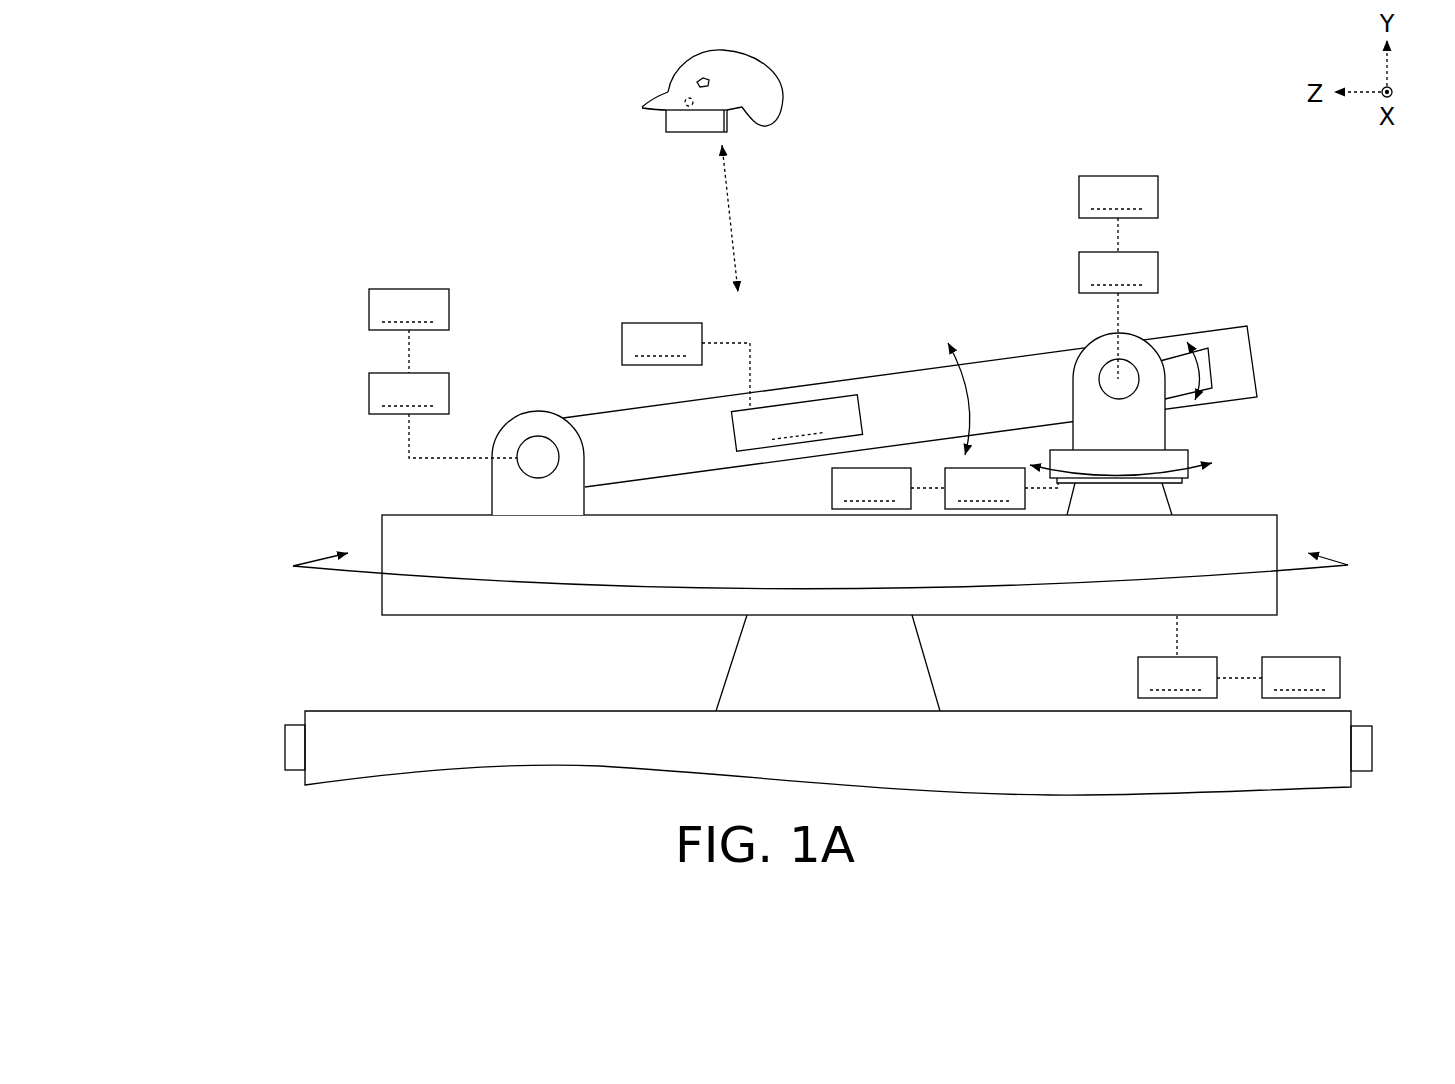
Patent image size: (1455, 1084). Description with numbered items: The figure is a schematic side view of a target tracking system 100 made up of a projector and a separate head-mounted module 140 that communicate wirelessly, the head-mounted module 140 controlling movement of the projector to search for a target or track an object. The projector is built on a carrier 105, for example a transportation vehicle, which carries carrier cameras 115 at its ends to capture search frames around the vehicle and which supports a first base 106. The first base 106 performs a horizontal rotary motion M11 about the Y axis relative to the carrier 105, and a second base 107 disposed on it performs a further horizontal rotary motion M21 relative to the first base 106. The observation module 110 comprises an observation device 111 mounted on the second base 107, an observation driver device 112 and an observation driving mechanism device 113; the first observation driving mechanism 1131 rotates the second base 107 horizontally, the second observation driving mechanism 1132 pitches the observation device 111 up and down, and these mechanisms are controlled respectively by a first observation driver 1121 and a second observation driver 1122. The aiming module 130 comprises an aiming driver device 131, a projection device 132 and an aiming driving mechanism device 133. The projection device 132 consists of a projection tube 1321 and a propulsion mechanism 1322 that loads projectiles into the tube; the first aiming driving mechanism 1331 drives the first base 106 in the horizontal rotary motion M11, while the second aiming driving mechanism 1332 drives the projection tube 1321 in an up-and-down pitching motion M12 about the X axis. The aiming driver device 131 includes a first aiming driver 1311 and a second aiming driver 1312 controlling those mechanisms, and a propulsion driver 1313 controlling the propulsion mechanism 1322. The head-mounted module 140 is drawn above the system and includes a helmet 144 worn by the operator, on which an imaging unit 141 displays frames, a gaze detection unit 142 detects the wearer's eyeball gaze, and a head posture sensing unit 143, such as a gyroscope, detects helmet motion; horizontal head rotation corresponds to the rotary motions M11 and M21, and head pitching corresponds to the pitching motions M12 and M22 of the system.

The target tracking system 100 is at (488, 152).
The carrier 105 is at (398, 710).
The first base 106 is at (512, 617).
The second base 107 is at (1180, 480).
The observation module 110 is at (233, 212).
The observation device 111 is at (1202, 345).
The observation driver device 112 is at (289, 80).
The observation driving mechanism device 113 is at (289, 162).
The carrier camera 115 is at (1412, 737).
The aiming module 130 is at (233, 500).
The aiming driver device 131 is at (289, 257).
The projection device 132 is at (289, 365).
The aiming driving mechanism device 133 is at (289, 445).
The head-mounted module 140 is at (693, 153).
The imaging unit 141 is at (677, 121).
The gaze detection unit 142 is at (692, 106).
The head posture sensing unit 143 is at (705, 79).
The helmet 144 is at (752, 66).
The first observation driver 1121 is at (617, 295).
The second observation driver 1122 is at (724, 183).
The first observation driving mechanism 1131 is at (674, 336).
The second observation driving mechanism 1132 is at (724, 287).
The first aiming driver 1311 is at (815, 479).
The second aiming driver 1312 is at (369, 331).
The propulsion driver 1313 is at (520, 365).
The projection tube 1321 is at (890, 395).
The propulsion mechanism 1322 is at (576, 423).
The first aiming driving mechanism 1331 is at (776, 572).
The second aiming driving mechanism 1332 is at (403, 440).
The horizontal rotary motion M11 is at (849, 571).
The up-and-down pitching motion M12 is at (957, 382).
The horizontal rotary motion M21 is at (1147, 459).
The up-and-down pitching motion M22 is at (1200, 368).